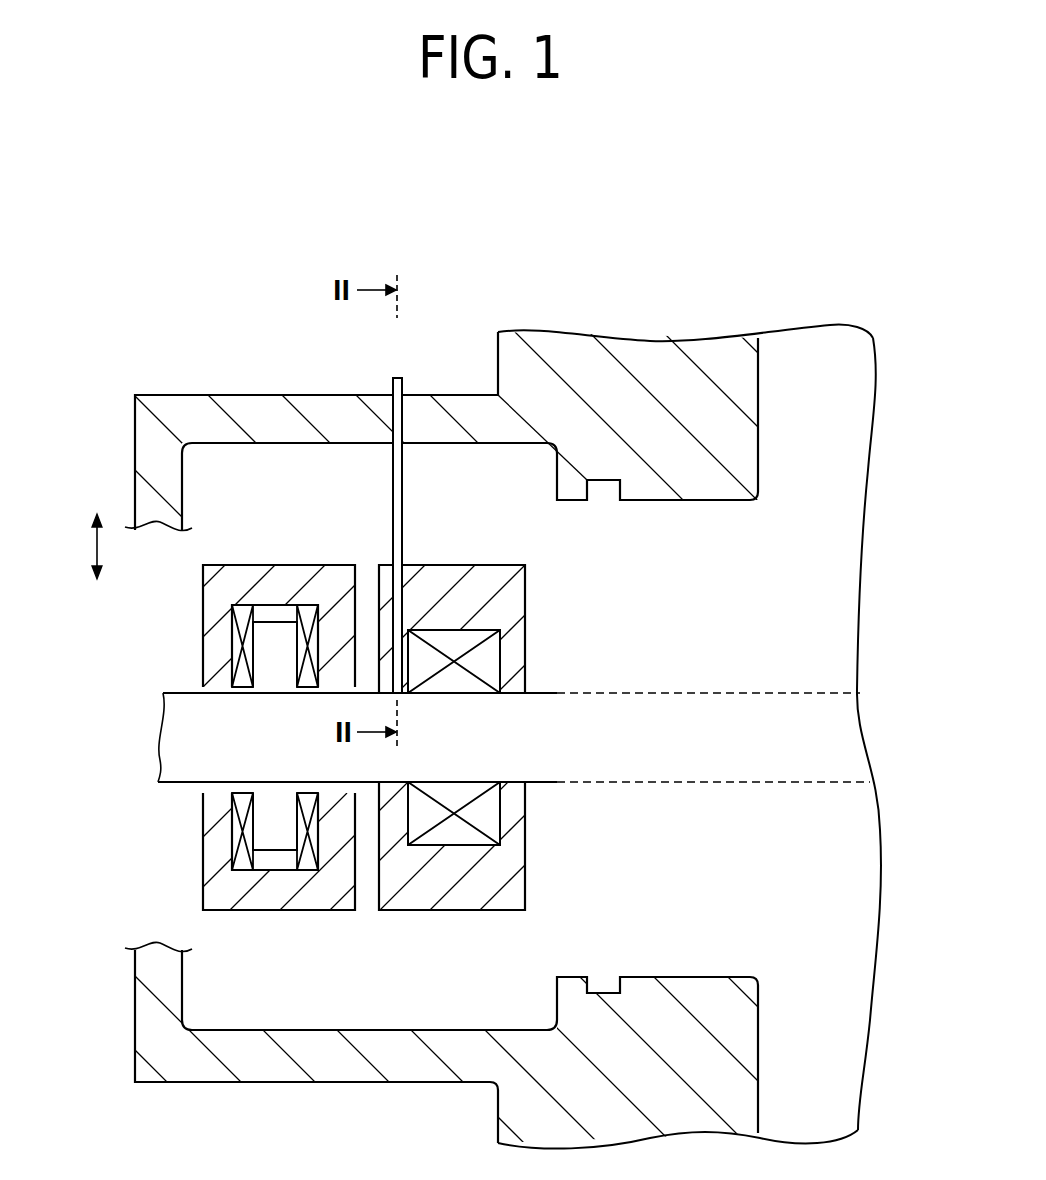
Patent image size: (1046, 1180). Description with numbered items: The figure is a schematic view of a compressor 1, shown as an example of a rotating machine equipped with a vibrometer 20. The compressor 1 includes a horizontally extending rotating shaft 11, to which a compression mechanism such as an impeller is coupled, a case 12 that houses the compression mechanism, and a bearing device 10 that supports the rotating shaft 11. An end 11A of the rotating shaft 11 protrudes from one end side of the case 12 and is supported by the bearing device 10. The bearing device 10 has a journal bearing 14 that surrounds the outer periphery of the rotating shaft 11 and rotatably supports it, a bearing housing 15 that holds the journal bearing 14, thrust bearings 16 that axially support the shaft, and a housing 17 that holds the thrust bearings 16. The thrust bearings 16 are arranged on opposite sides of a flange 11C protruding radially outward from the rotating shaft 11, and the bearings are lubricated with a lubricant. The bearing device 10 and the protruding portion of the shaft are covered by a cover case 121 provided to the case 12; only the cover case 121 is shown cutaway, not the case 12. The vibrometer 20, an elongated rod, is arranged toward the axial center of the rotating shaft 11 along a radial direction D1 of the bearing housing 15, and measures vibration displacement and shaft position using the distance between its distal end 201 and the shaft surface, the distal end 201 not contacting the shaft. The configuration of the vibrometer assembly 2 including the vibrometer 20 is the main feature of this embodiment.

The compressor 1 is at (861, 258).
The vibrometer assembly 2 is at (366, 370).
The bearing device 10 is at (486, 536).
The rotating shaft 11 is at (540, 693).
The end of the rotating shaft 11A is at (187, 693).
The flange 11C is at (276, 622).
The case 12 is at (870, 447).
The journal bearing 14 is at (493, 628).
The bearing housing 15 is at (447, 563).
The thrust bearings 16 is at (242, 605).
The housing 17 is at (210, 565).
The vibrometer 20 is at (386, 514).
The distal end 201 is at (398, 693).
The cover case 121 is at (247, 395).
The radial direction D1 is at (78, 546).